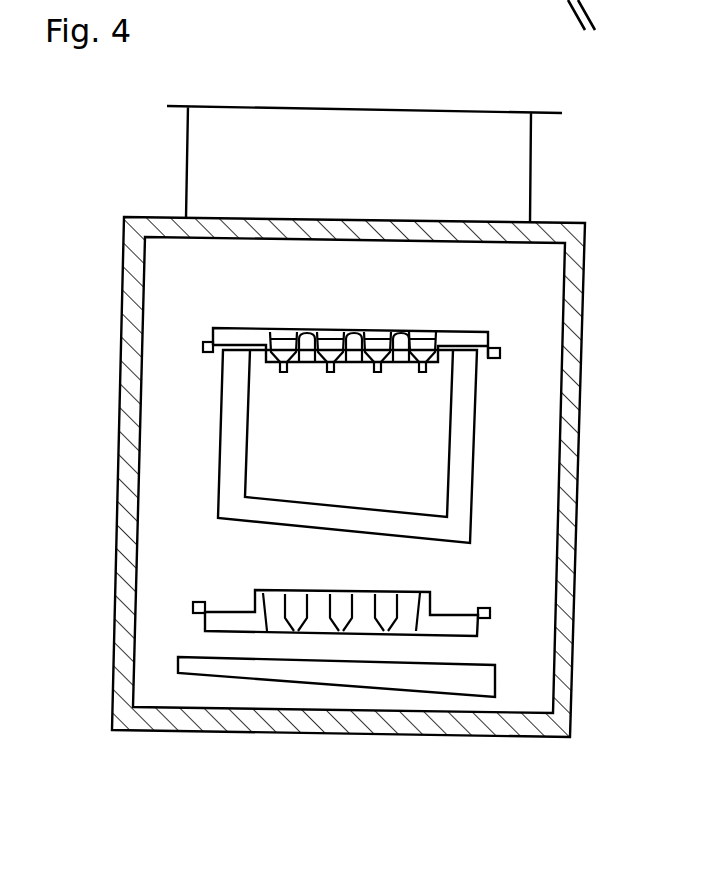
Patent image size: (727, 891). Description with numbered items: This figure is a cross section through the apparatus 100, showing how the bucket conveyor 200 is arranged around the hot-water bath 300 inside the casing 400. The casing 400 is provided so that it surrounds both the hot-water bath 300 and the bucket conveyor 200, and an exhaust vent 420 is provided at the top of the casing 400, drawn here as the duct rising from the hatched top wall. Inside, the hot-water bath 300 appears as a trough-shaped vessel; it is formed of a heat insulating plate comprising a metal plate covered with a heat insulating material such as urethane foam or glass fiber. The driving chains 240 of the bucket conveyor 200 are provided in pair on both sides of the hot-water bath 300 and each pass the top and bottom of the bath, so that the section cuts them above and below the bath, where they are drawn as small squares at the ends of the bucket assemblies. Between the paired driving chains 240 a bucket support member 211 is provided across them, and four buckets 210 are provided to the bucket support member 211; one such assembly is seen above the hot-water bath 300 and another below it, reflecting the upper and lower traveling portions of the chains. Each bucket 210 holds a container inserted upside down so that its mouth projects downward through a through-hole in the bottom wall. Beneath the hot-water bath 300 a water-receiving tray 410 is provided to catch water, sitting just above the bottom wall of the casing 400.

The apparatus 100 is at (98, 210).
The bucket conveyor 200 is at (508, 327).
The bucket 210 is at (284, 330).
The bucket support member 211 is at (228, 328).
The driving chain 240 is at (203, 350).
The hot-water bath 300 is at (478, 441).
The casing 400 is at (578, 501).
The water-receiving tray 410 is at (313, 676).
The exhaust vent 420 is at (531, 168).